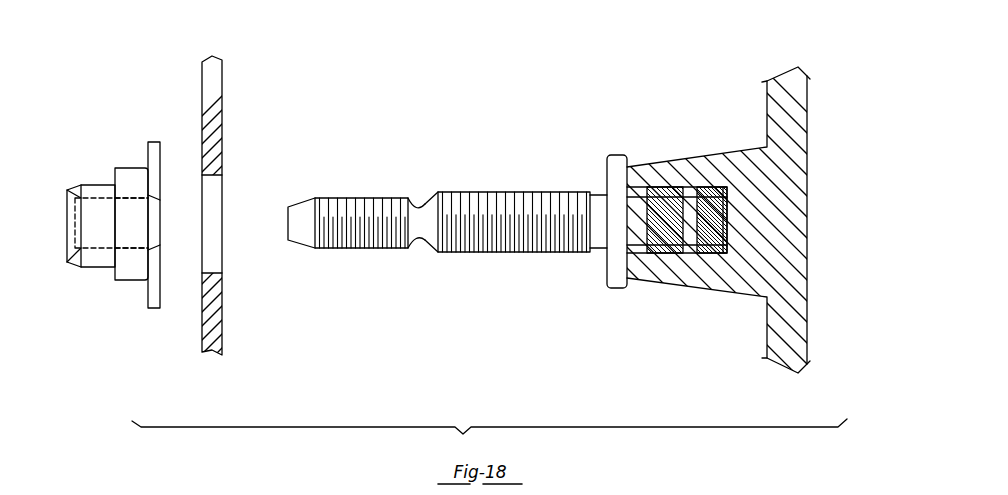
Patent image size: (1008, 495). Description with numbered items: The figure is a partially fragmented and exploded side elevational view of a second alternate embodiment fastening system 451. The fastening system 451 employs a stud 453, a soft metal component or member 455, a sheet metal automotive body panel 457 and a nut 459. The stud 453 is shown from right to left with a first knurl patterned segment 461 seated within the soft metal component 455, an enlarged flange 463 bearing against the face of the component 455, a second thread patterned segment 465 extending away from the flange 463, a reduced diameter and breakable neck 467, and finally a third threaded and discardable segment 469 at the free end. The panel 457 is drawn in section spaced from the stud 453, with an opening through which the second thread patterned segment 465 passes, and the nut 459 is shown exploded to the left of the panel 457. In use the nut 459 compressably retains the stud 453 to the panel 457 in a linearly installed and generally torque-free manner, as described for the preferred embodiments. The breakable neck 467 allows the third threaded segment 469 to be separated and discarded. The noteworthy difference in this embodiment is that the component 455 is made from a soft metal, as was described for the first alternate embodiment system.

The fastening system 451 is at (462, 128).
The stud 453 is at (507, 230).
The soft metal component 455 is at (787, 203).
The sheet metal automotive body panel 457 is at (205, 333).
The nut 459 is at (93, 188).
The first knurl patterned segment 461 is at (665, 200).
The enlarged flange 463 is at (618, 158).
The second thread patterned segment 465 is at (527, 220).
The reduced diameter and breakable neck 467 is at (418, 230).
The third threaded and discardable segment 469 is at (353, 217).